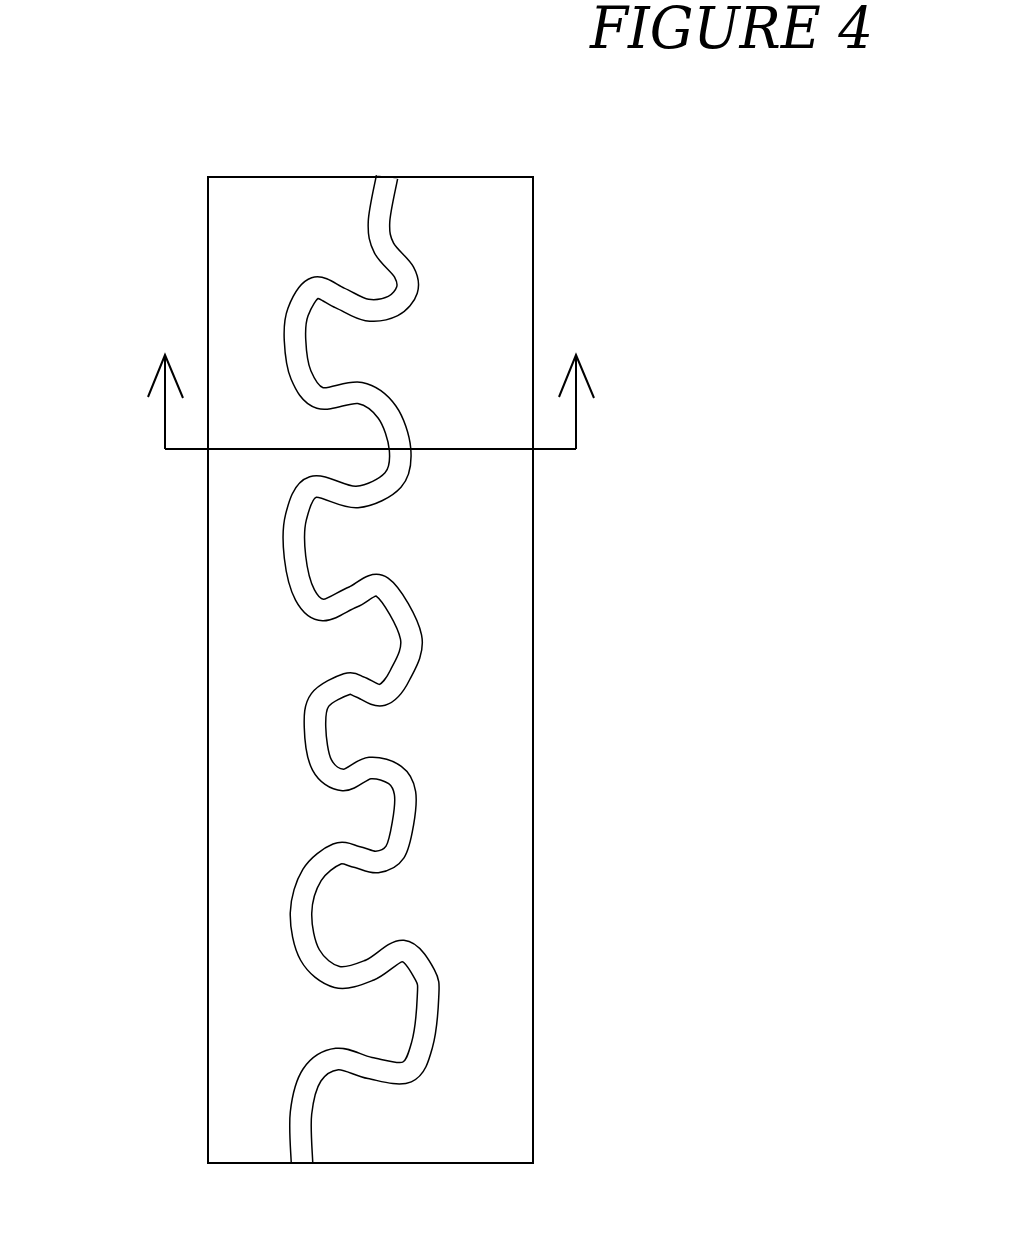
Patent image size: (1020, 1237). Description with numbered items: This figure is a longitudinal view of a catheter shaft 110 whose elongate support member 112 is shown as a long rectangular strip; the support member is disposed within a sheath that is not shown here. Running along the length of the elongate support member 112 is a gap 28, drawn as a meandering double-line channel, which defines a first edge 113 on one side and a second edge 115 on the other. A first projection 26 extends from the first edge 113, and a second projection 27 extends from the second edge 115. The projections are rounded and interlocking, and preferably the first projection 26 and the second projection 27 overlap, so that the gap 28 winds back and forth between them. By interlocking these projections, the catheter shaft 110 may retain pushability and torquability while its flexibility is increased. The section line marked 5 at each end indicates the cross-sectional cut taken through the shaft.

The catheter shaft 110 is at (408, 670).
The elongate support member 112 is at (346, 670).
The first edge 113 is at (373, 201).
The second edge 115 is at (402, 201).
The first projection 26 is at (350, 670).
The second projection 27 is at (300, 528).
The gap 28 is at (408, 273).
The section line 5- 5 is at (373, 402).